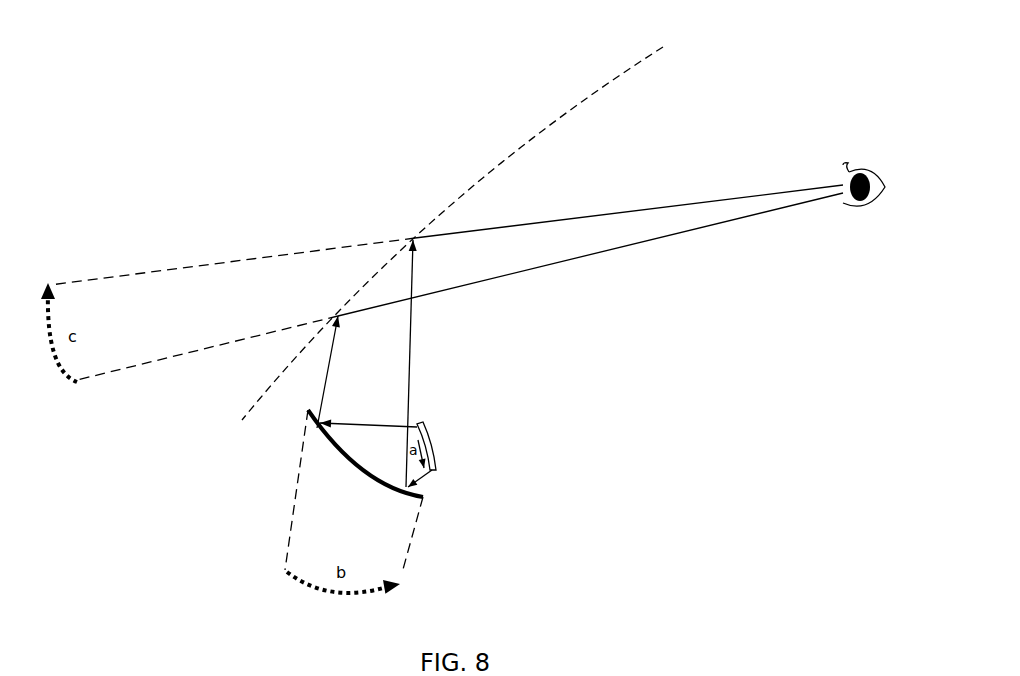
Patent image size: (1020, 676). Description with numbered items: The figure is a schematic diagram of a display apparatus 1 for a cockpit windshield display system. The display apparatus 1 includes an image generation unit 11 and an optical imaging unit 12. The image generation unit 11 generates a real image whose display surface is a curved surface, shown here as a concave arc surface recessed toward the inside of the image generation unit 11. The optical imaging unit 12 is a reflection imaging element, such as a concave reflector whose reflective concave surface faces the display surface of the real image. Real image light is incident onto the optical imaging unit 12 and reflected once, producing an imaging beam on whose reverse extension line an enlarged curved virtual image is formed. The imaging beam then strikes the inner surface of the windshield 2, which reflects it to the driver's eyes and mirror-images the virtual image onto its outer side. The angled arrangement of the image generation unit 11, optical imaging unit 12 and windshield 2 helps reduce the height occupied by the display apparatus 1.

The display apparatus 1 is at (435, 483).
The windshield 2 is at (472, 188).
The image generation unit 11 is at (427, 433).
The optical imaging unit 12 is at (405, 483).